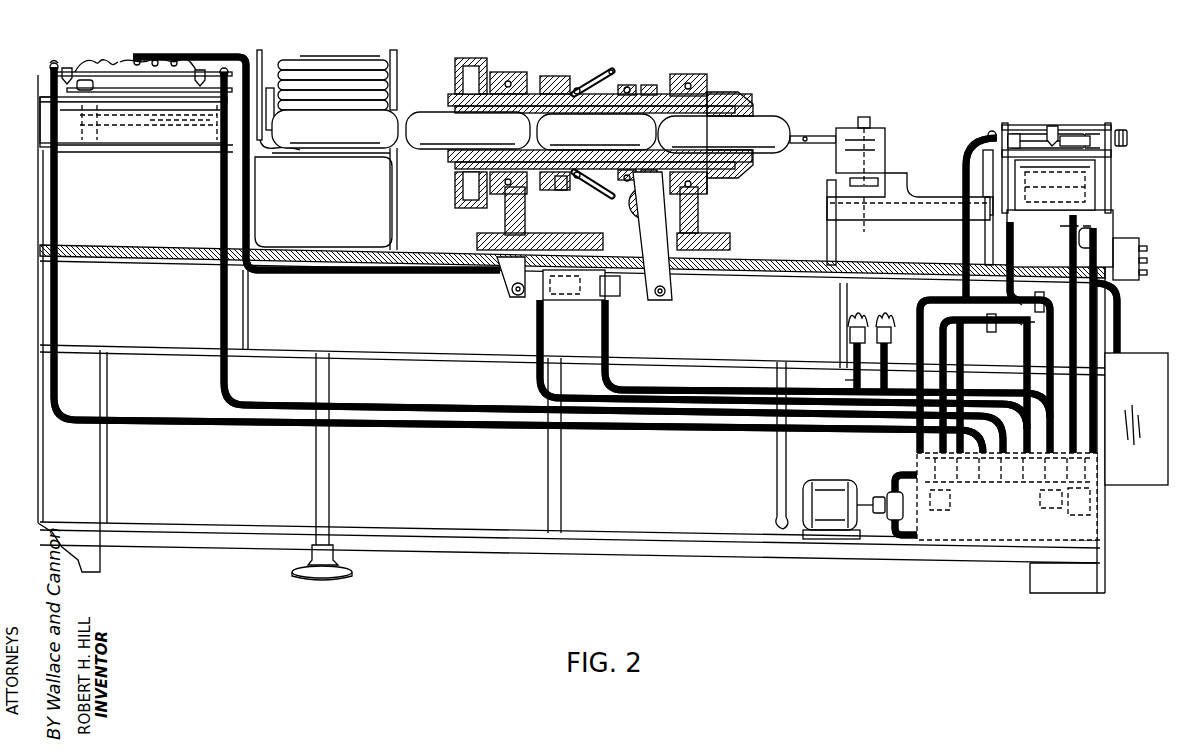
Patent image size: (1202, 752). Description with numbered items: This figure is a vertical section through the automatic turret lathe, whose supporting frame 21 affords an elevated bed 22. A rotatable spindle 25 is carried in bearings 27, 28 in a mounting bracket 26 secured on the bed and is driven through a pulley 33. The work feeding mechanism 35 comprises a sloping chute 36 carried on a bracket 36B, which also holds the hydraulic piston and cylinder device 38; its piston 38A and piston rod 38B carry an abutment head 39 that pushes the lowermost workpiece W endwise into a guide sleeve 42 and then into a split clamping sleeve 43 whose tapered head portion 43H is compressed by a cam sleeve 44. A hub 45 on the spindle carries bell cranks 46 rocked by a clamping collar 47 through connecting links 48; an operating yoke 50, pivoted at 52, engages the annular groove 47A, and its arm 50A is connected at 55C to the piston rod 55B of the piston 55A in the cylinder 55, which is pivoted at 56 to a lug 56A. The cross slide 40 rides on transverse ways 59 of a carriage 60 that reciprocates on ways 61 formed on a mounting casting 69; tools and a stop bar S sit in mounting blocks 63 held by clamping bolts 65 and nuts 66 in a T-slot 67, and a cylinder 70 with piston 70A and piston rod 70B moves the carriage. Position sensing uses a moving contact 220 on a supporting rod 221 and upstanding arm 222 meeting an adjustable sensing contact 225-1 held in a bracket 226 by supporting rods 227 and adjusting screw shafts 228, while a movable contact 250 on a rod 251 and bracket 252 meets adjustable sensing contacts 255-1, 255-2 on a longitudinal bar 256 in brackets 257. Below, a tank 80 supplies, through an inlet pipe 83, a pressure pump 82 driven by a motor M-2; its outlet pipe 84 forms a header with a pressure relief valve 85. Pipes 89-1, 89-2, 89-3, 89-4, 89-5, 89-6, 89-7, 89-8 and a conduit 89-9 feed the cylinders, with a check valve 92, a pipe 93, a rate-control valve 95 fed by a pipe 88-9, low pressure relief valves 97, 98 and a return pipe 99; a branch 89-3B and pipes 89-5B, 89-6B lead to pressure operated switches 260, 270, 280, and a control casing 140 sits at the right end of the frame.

The supporting frame 21 is at (476, 555).
The elevated bed 22 is at (763, 259).
The rotatable spindle 25 is at (548, 74).
The mounting bracket 26 is at (508, 218).
The bearing 27 is at (510, 71).
The bearing 28 is at (693, 83).
The pulley 33 is at (457, 80).
The work feeding mechanism 35 is at (352, 58).
The chute 36 is at (398, 64).
The bracket 36B is at (302, 153).
The hydraulic piston and cylinder device 38 is at (105, 147).
The piston 38A is at (103, 145).
The piston rod 38B is at (168, 130).
The abutment head 39 is at (265, 152).
The turret or cross slide 40 is at (887, 115).
The guide sleeve 42 is at (447, 157).
The split clamping sleeve 43 is at (713, 153).
The tapered head portion 43H is at (752, 168).
The cam sleeve 44 is at (728, 106).
The hub 45 is at (558, 185).
The bell cranks 46 is at (595, 74).
The slidable clamping collar 47 is at (638, 85).
The annular groove 47A is at (649, 84).
The connecting links 48 is at (628, 86).
The operating yoke 50 is at (693, 228).
The arm 50A is at (667, 287).
The pivot 52 is at (637, 212).
The piston and cylinder device 55 is at (541, 328).
The piston 55A is at (580, 298).
The piston rod 55B is at (619, 300).
The connection 55C is at (657, 287).
The pivot 56 is at (511, 293).
The lug 56A is at (510, 265).
The transverse ways 59 is at (897, 188).
The carriage 60 is at (923, 193).
The supporting and guiding ways 61 is at (829, 214).
The mounting block 63 is at (883, 145).
The clamping bolt 65 is at (871, 125).
The nut 66 is at (865, 226).
The T-slot 67 is at (873, 188).
The mounting casting 69 is at (1087, 220).
The cylinder 70 is at (1070, 197).
The piston 70A is at (1093, 181).
The piston rod 70B is at (1090, 167).
The tank 80 is at (985, 535).
The pressure pump 82 is at (884, 514).
The inlet pipe 83 is at (905, 540).
The outlet pipe 84 is at (903, 472).
The pressure relief valve 85 is at (950, 515).
The pipe 88-9 is at (1080, 512).
The outlet pipe 89-1 is at (935, 352).
The outlet pipe 89-2 is at (978, 355).
The pipe 89-3 is at (453, 427).
The branch 89-3B is at (845, 378).
The pipe 89-4 is at (485, 418).
The pipe 89-5 is at (623, 401).
The pipe 89-5B is at (850, 353).
The pipe 89-6 is at (700, 394).
The pipe 89-6B is at (888, 376).
The pipe 89-7 is at (1013, 258).
The pipe 89-8 is at (1078, 340).
The conduit 89-9 is at (1098, 320).
The check valve 92 is at (1100, 232).
The pipe 93 is at (1103, 493).
The rate-control valve 95 is at (1048, 509).
The low pressure relief valve 97 is at (986, 318).
The low pressure relief valve 98 is at (1043, 313).
The return pipe 99 is at (905, 340).
The control casing 140 is at (1157, 470).
The moving contact 220 is at (1075, 137).
The supporting rod 221 is at (1020, 147).
The upstanding arm 222 is at (975, 140).
The adjustable sensing contact 225-1 is at (1087, 125).
The bracket 226 is at (1130, 137).
The supporting rods 227 is at (1030, 136).
The adjusting screw shafts 228 is at (1054, 126).
The movable contact 250 is at (82, 90).
The rod 251 is at (261, 52).
The bracket 252 is at (263, 118).
The adjustable sensing contact 255-1 is at (68, 67).
The adjustable sensing contact 255-2 is at (204, 70).
The longitudinal bar 256 is at (56, 64).
The brackets 257 is at (49, 74).
The pressure operated switch 260 is at (849, 332).
The pressure operated switch 270 is at (850, 320).
The pressure operated switch 280 is at (882, 325).
The motor M-2 is at (837, 530).
The stop bar S is at (817, 132).
The workpieces W is at (355, 133).